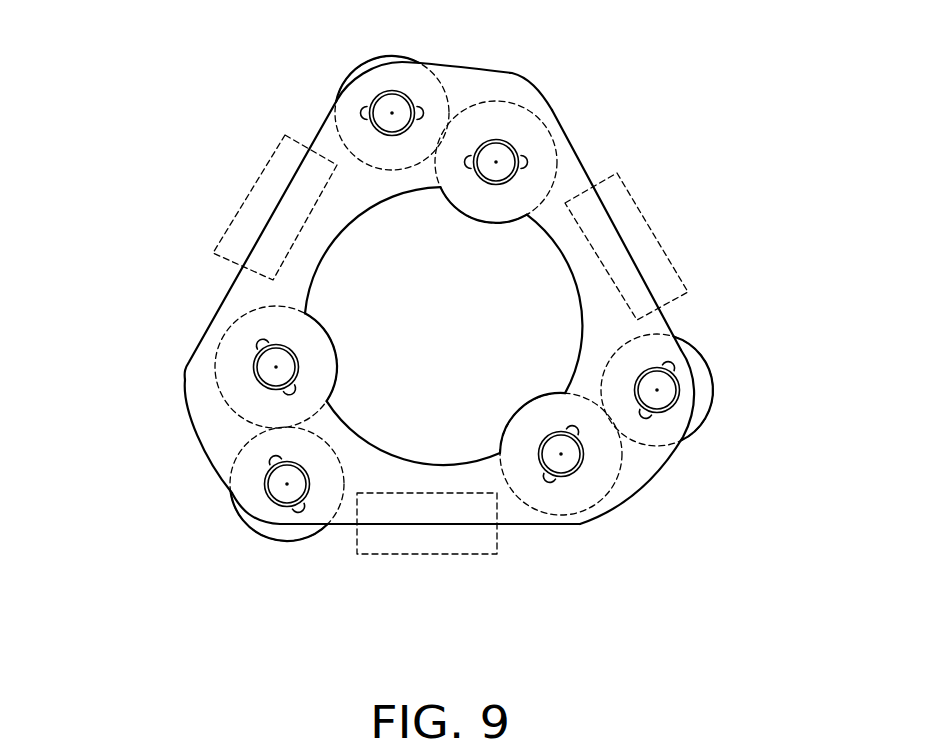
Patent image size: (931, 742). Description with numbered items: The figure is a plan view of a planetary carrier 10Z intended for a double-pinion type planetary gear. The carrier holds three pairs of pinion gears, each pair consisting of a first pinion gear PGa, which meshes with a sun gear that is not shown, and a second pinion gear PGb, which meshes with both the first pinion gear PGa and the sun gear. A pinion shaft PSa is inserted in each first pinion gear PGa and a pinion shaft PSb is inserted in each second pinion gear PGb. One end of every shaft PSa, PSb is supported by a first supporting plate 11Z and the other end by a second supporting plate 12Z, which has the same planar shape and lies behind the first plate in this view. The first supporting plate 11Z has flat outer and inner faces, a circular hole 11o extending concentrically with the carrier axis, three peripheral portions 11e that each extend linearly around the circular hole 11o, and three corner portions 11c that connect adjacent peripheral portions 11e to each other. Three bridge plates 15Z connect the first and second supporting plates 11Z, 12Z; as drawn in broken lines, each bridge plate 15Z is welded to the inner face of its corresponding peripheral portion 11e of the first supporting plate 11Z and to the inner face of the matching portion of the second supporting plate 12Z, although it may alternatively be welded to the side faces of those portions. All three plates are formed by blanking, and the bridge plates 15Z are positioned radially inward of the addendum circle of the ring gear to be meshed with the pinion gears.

The planetary carrier 10Z is at (405, 309).
The first supporting plate 11Z is at (385, 280).
The second supporting plate 12Z is at (442, 280).
The corner portion 11c is at (470, 88).
The circular hole 11o is at (446, 327).
The peripheral portion 11e is at (320, 260).
The bridge plate 15Z is at (282, 217).
The first pinion gear PGa is at (452, 195).
The second pinion gear PGb is at (382, 65).
The pinion shaft PSa is at (563, 460).
The pinion shaft PSb is at (667, 383).